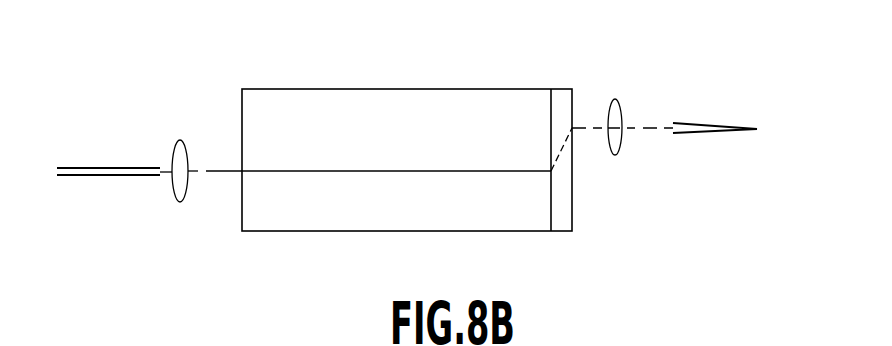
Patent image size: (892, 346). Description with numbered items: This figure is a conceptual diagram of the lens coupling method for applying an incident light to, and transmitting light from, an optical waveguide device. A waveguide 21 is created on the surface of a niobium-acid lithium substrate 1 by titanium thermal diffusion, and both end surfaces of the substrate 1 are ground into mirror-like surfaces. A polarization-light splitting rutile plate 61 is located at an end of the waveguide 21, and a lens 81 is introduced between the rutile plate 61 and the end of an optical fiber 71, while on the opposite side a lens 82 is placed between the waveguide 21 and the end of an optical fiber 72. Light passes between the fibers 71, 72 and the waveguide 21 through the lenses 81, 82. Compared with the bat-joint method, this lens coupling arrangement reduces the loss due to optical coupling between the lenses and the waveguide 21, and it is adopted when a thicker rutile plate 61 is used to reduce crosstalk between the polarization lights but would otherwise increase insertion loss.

The niobium-acid lithium substrate 1 is at (283, 89).
The waveguide 21 is at (383, 168).
The polarization-light splitting rutile plate 61 is at (560, 89).
The optical fiber 71 is at (737, 126).
The optical fiber 72 is at (126, 168).
The lens 81 is at (618, 157).
The lens 82 is at (175, 192).